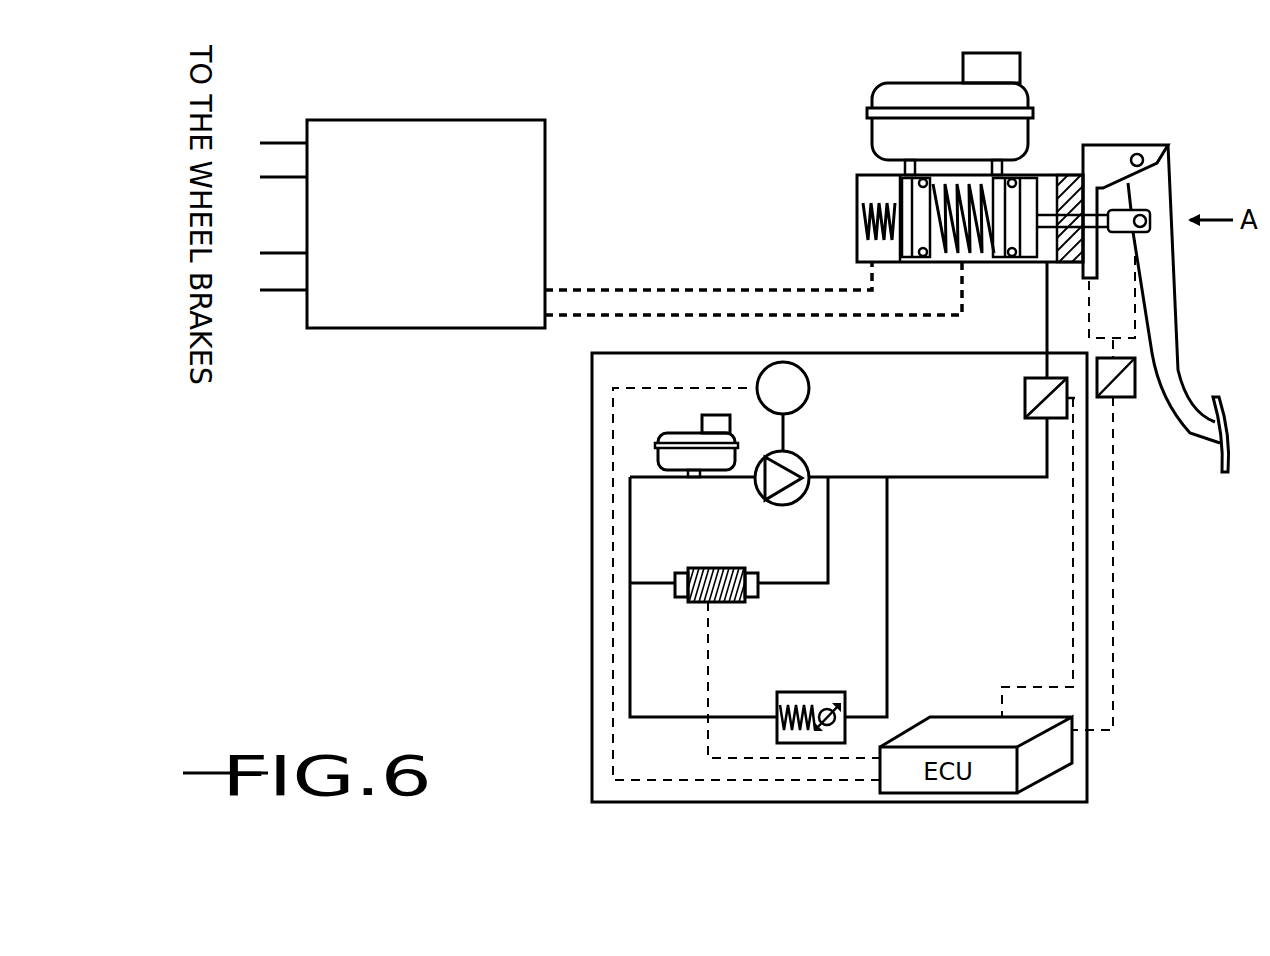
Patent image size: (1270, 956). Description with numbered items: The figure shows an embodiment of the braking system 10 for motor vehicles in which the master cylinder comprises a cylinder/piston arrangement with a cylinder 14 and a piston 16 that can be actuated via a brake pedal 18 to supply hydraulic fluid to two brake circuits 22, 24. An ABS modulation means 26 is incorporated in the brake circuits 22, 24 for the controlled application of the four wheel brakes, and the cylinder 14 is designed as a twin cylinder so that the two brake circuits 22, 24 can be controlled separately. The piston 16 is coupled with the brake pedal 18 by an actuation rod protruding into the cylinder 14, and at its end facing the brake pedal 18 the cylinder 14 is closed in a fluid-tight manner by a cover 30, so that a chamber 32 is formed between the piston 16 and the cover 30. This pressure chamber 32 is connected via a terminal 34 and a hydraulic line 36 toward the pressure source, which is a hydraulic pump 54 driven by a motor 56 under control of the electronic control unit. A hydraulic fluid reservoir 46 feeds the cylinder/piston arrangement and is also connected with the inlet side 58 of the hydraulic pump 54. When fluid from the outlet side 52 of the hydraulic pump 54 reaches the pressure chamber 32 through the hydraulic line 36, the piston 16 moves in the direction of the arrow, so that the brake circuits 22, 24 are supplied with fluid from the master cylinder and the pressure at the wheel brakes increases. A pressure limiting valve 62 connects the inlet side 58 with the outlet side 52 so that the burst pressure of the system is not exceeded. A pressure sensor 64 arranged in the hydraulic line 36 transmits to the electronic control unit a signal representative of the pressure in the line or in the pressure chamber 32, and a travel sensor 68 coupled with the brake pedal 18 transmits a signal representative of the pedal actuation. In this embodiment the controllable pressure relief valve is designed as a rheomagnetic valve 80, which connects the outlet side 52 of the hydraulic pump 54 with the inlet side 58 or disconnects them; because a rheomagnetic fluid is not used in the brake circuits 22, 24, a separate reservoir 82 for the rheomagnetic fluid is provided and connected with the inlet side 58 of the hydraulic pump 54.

The braking system 10 is at (1150, 578).
The cylinder 14 is at (893, 262).
The piston 16 is at (997, 220).
The brake pedal 18 is at (1158, 302).
The brake circuit 22 is at (563, 290).
The brake circuit 24 is at (560, 315).
The ABS modulation means 26 is at (547, 163).
The cover 30 is at (1068, 172).
The chamber 32 is at (1053, 173).
The terminal 34 is at (1040, 268).
The hydraulic line 36 is at (1042, 333).
The hydraulic fluid reservoir 46 is at (928, 98).
The outlet side 52 is at (820, 473).
The hydraulic pump 54 is at (753, 487).
The motor 56 is at (800, 380).
The inlet side 58 is at (687, 477).
The pressure limiting valve 62 is at (850, 692).
The pressure sensor 64 is at (1023, 402).
The travel sensor 68 is at (1130, 397).
The rheomagnetic valve 80 is at (743, 598).
The reservoir 82 is at (663, 453).